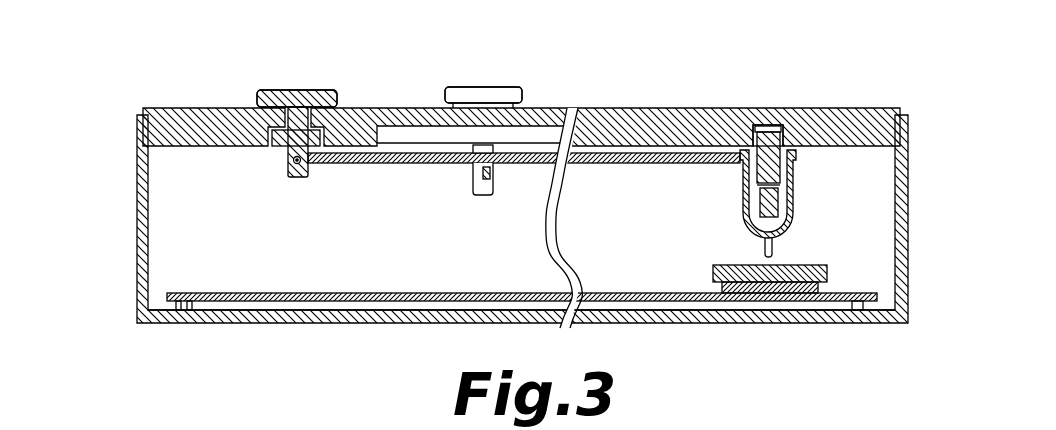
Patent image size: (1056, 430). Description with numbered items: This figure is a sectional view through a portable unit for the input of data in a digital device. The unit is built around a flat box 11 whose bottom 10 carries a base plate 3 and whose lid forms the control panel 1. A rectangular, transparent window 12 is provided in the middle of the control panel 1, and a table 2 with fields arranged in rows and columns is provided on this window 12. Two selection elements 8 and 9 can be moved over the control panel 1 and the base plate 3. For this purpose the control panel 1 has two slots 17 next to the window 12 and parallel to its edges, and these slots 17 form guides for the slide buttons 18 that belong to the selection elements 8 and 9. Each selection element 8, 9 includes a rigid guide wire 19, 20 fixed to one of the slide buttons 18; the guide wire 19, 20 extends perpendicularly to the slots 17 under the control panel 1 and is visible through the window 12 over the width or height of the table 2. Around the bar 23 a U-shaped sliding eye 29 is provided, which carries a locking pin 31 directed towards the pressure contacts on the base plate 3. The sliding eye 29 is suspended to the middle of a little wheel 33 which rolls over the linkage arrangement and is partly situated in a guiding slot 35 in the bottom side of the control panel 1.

The control panel 1 is at (840, 117).
The table 2 is at (422, 113).
The base plate 3 is at (877, 295).
The selection element 8 is at (303, 79).
The selection element 9 is at (497, 78).
The bottom 10 is at (862, 321).
The flat box 11 is at (932, 166).
The transparent window 12 is at (555, 88).
The slot 17 is at (242, 108).
The slide button 18 is at (318, 90).
The rigid guide wire 19 is at (652, 157).
The rigid guide wire 20 is at (493, 173).
The bar 23 is at (790, 193).
The sliding eye 29 is at (793, 228).
The locking pin 31 is at (773, 255).
The little wheel 33 is at (778, 125).
The guiding slot 35 is at (770, 126).